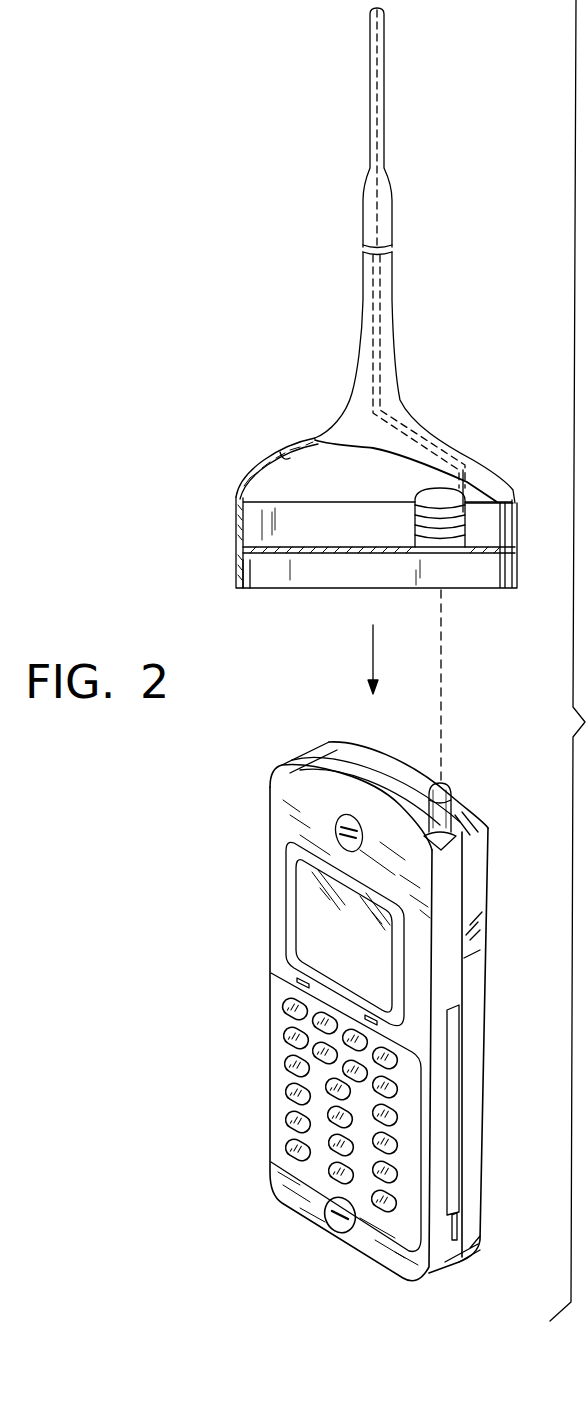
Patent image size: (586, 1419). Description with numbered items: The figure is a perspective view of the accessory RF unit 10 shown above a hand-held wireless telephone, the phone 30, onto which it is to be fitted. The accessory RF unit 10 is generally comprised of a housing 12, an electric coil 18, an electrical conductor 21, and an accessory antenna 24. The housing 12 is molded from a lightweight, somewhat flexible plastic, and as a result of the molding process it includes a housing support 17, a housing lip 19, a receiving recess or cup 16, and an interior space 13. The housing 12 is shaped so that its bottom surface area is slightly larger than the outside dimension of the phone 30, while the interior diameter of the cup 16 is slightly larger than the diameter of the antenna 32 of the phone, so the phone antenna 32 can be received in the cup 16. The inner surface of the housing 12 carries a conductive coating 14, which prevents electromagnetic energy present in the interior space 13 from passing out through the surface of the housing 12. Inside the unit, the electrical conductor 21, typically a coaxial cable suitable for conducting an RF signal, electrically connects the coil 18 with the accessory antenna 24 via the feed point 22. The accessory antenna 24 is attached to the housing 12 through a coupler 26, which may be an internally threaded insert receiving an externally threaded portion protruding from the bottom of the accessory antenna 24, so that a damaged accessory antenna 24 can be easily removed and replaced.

The accessory RF unit 10 is at (216, 196).
The housing 12 is at (238, 497).
The interior space 13 is at (340, 457).
The conductive coating 14 is at (275, 462).
The receiving recess or cup 16 is at (441, 545).
The housing support 17 is at (258, 550).
The electric coil 18 is at (490, 503).
The housing lip 19 is at (244, 574).
The electrical conductor 21 is at (380, 347).
The feed point 22 is at (385, 248).
The accessory antenna 24 is at (392, 184).
The coupler 26 is at (362, 262).
The phone 30 is at (222, 890).
The antenna 32 is at (452, 800).